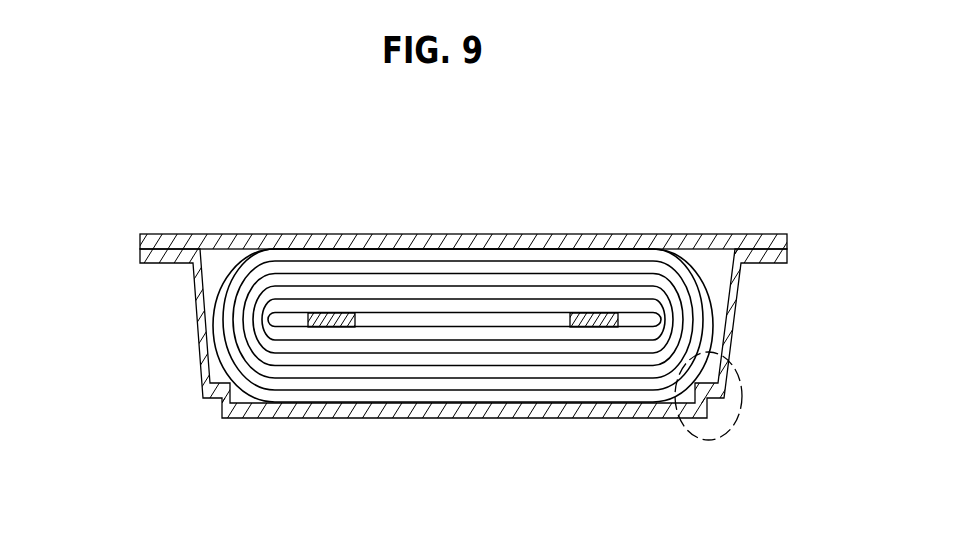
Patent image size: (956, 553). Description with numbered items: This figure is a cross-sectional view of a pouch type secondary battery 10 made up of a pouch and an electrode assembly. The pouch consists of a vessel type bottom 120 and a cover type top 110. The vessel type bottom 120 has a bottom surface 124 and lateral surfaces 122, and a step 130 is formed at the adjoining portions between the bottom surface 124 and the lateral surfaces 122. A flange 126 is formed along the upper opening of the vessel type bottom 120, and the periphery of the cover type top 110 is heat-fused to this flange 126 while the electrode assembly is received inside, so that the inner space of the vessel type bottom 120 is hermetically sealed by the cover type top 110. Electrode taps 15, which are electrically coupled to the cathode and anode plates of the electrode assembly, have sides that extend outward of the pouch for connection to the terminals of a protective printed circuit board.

The pouch type secondary battery 10 is at (390, 275).
The electrode tap 15 is at (592, 328).
The cover type top 110 is at (545, 243).
The vessel type bottom 120 is at (460, 352).
The lateral surface 122 is at (203, 343).
The bottom surface 124 is at (265, 418).
The flange 126 is at (165, 262).
The step 130 is at (730, 432).